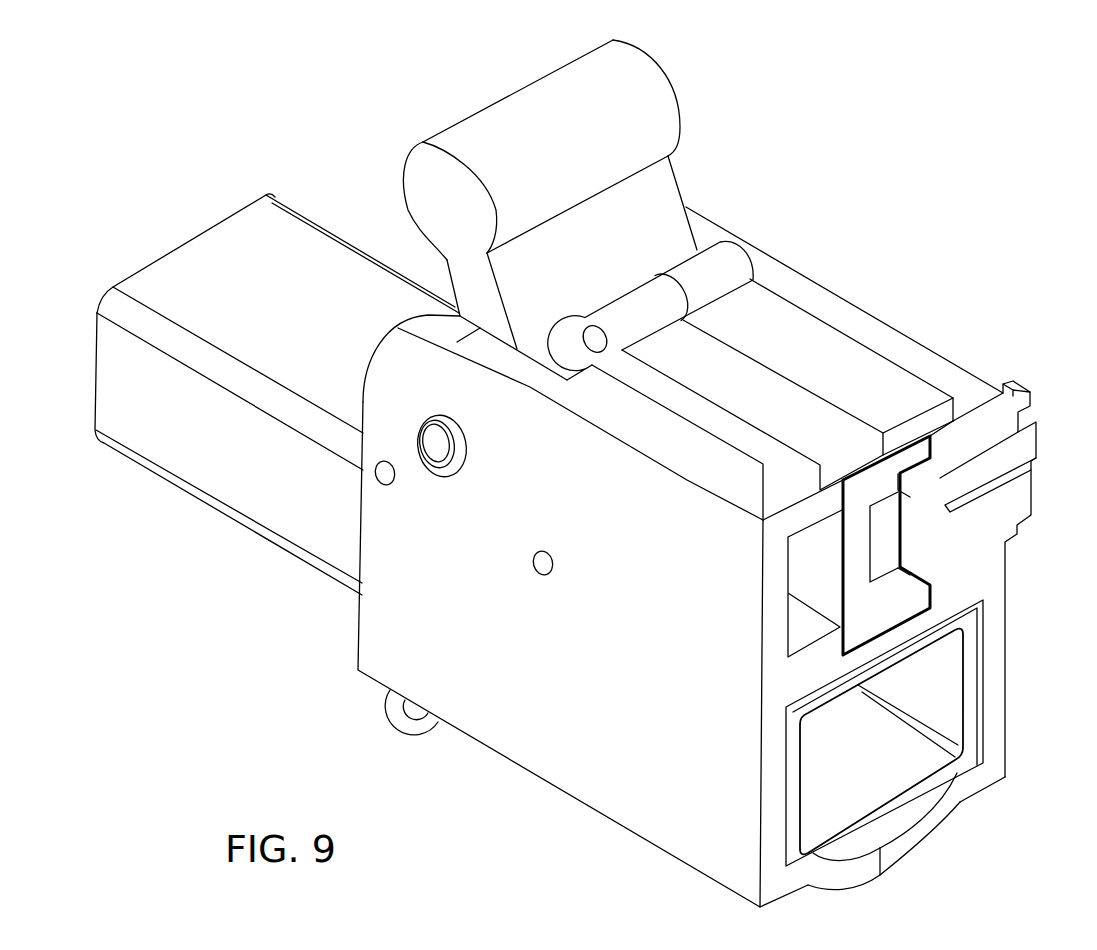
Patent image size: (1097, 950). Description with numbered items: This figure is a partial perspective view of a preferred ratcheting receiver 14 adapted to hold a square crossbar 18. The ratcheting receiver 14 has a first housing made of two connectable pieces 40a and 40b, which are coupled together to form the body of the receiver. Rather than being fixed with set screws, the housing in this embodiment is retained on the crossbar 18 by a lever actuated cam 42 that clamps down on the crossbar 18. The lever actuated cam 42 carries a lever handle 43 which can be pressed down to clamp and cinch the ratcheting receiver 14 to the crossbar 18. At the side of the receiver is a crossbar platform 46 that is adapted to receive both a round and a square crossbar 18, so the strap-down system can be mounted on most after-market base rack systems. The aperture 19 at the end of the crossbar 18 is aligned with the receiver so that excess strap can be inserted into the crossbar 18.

The ratcheting receiver 14 is at (775, 328).
The crossbar 18 is at (307, 238).
The aperture 19 is at (957, 687).
The connectable housing piece 40a is at (877, 332).
The connectable housing piece 40b is at (607, 797).
The lever actuated cam 42 is at (667, 195).
The lever handle 43 is at (637, 73).
The crossbar platform 46 is at (900, 817).